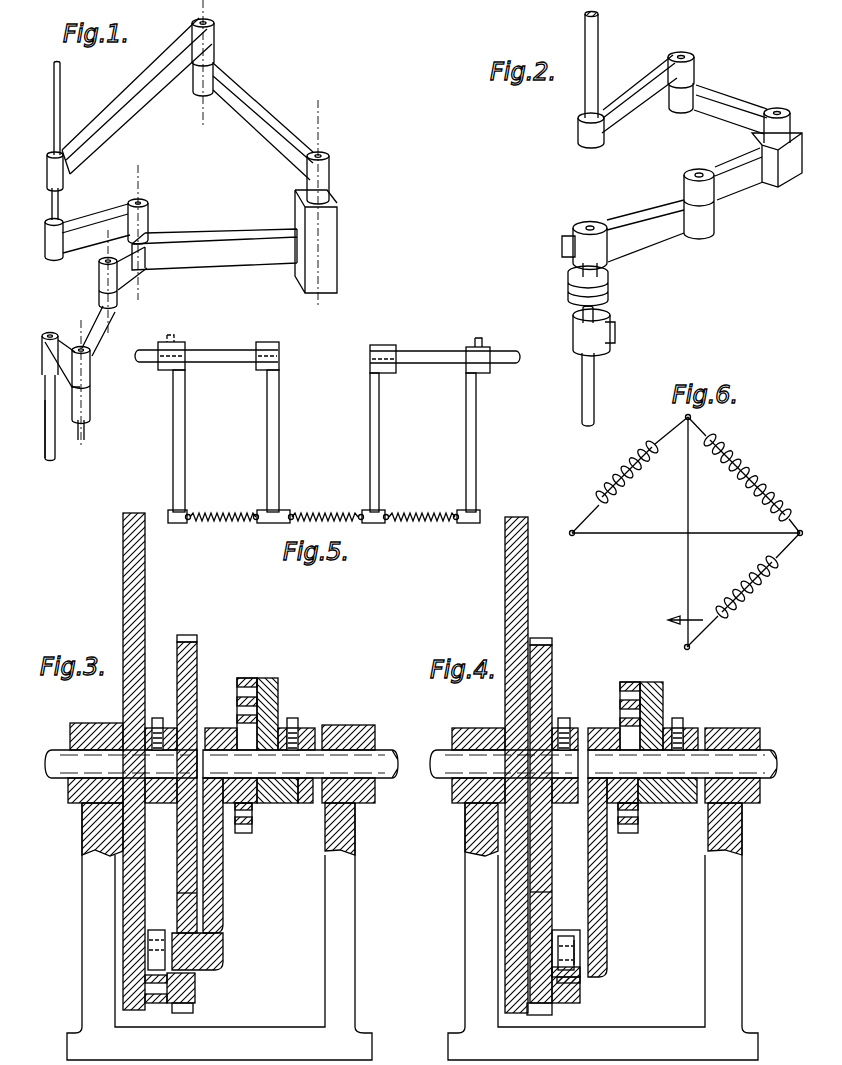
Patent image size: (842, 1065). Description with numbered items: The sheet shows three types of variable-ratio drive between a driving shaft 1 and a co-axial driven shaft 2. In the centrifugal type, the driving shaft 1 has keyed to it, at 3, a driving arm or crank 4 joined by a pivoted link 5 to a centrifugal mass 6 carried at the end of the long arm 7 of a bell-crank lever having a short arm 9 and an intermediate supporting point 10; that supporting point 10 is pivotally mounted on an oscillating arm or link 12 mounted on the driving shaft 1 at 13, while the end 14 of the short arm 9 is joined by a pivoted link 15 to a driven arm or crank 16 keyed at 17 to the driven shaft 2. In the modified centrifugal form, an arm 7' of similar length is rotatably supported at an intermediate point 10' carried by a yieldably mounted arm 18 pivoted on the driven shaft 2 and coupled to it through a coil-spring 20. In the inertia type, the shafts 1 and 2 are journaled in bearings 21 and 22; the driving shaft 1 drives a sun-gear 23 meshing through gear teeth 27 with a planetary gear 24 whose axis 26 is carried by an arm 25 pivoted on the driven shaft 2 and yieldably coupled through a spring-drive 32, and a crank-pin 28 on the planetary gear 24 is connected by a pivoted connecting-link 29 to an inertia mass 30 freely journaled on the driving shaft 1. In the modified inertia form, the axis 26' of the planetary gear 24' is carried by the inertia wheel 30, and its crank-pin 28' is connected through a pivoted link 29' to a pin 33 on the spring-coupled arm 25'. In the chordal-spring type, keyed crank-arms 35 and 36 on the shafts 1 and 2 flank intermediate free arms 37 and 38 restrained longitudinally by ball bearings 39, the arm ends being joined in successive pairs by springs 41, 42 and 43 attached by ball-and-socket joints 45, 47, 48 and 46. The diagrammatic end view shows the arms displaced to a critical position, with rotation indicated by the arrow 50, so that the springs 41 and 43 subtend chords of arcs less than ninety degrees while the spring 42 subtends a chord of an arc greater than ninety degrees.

In FIG. 1, the driving shaft 1 is at (61, 84).
In FIG. 2, the driving shaft 1 is at (585, 34).
In FIG. 5, the driving shaft 1 is at (223, 350).
In FIG. 3, the driving shaft 1 is at (57, 750).
In FIG. 4, the driving shaft 1 is at (450, 750).
In FIG. 1, the driven shaft 2 is at (56, 445).
In FIG. 2, the driven shaft 2 is at (594, 378).
In FIG. 5, the driven shaft 2 is at (430, 351).
In FIG. 3, the driven shaft 2 is at (375, 755).
In FIG. 4, the driven shaft 2 is at (758, 755).
In FIG. 1, the keying point of driving arm 3 is at (50, 158).
In FIG. 2, the keying point of driving arm 3 is at (578, 122).
In FIG. 1, the driving arm or crank 4 is at (137, 108).
In FIG. 2, the driving arm or crank 4 is at (641, 80).
In FIG. 1, the pivoted link 5 is at (252, 98).
In FIG. 2, the pivoted link 5 is at (730, 96).
In FIG. 1, the centrifugal mass 6 is at (337, 228).
In FIG. 2, the centrifugal mass 6 is at (793, 175).
In FIG. 1, the long arm of bell-crank lever 7 is at (214, 238).
In FIG. 2, the mass-supporting arm 7' is at (740, 186).
In FIG. 1, the short arm of bell crank 9 is at (125, 285).
In FIG. 1, the intermediate supporting point 10 is at (153, 248).
In FIG. 2, the intermediate point 10' is at (696, 191).
In FIG. 1, the oscillating arm or link 12 is at (105, 210).
In FIG. 1, the mounting point of oscillating link 13 is at (55, 252).
In FIG. 1, the end of short bell-crank arm 14 is at (100, 278).
In FIG. 1, the pivoted link 15 is at (97, 348).
In FIG. 1, the driven arm or crank 16 is at (75, 345).
In FIG. 1, the keying point of driven crank 17 is at (45, 334).
In FIG. 2, the yieldably mounted arm 18 is at (661, 237).
In FIG. 2, the coil-spring 20 is at (568, 300).
In FIG. 3, the bearing 21 is at (96, 723).
In FIG. 4, the bearing 21 is at (476, 728).
In FIG. 3, the bearing 22 is at (342, 725).
In FIG. 4, the bearing 22 is at (725, 728).
In FIG. 3, the sun-gear 23 is at (192, 651).
In FIG. 4, the sun-gear 23 is at (552, 652).
In FIG. 3, the planetary gear 24 is at (199, 993).
In FIG. 4, the planetary gear 24' is at (551, 1016).
In FIG. 3, the arm 25 is at (232, 855).
In FIG. 4, the spring-coupled arm 25' is at (619, 877).
In FIG. 3, the axis of planetary gear 26 is at (216, 951).
In FIG. 4, the axis of planetary gear 26' is at (566, 942).
In FIG. 3, the gear teeth 27 is at (177, 893).
In FIG. 4, the gear teeth 27 is at (552, 892).
In FIG. 3, the crank-pin 28 is at (154, 1001).
In FIG. 4, the crank-pin 28' is at (587, 985).
In FIG. 3, the pivoted connecting-link 29 is at (154, 939).
In FIG. 4, the pivoted link 29' is at (588, 1003).
In FIG. 3, the inertia mass 30 is at (123, 582).
In FIG. 4, the inertia mass 30 is at (505, 584).
In FIG. 3, the spring-drive 32 is at (250, 833).
In FIG. 4, the spring-drive 32 is at (633, 833).
In FIG. 4, the pin 33 is at (582, 955).
In FIG. 5, the crank-arm 35 is at (185, 434).
In FIG. 6, the crank-arm 35 is at (688, 590).
In FIG. 5, the crank-arm 36 is at (476, 434).
In FIG. 6, the crank-arm 36 is at (645, 534).
In FIG. 5, the intermediate free arm 37 is at (279, 432).
In FIG. 6, the intermediate free arm 37 is at (737, 534).
In FIG. 5, the intermediate free arm 38 is at (379, 432).
In FIG. 6, the intermediate free arm 38 is at (688, 480).
In FIG. 5, the ball bearings 39 is at (268, 345).
In FIG. 5, the spring 41 is at (221, 510).
In FIG. 6, the spring 41 is at (757, 598).
In FIG. 5, the spring 42 is at (323, 510).
In FIG. 6, the spring 42 is at (762, 486).
In FIG. 5, the spring 43 is at (417, 510).
In FIG. 6, the spring 43 is at (606, 470).
In FIG. 5, the ball-and-socket joint 45 is at (185, 523).
In FIG. 6, the ball-and-socket joint 45 is at (690, 647).
In FIG. 5, the ball-and-socket joint 46 is at (457, 523).
In FIG. 6, the ball-and-socket joint 46 is at (573, 549).
In FIG. 5, the ball-and-socket joint 47 is at (290, 520).
In FIG. 6, the ball-and-socket joint 47 is at (803, 549).
In FIG. 5, the ball-and-socket joint 48 is at (386, 521).
In FIG. 6, the ball-and-socket joint 48 is at (691, 418).
In FIG. 6, the arrow 50 is at (687, 627).